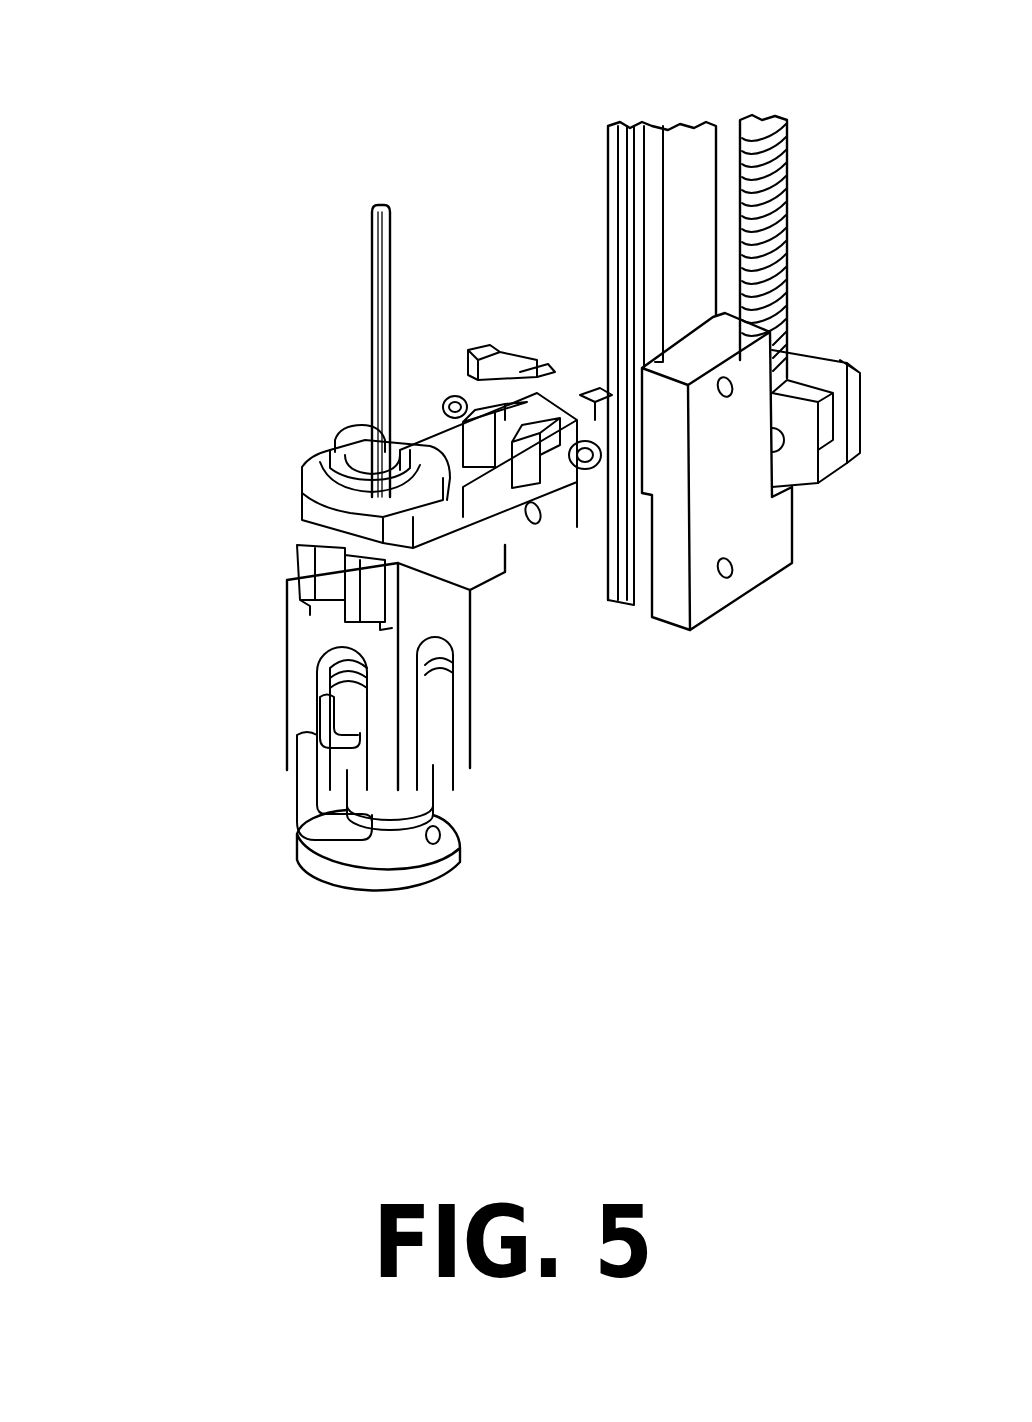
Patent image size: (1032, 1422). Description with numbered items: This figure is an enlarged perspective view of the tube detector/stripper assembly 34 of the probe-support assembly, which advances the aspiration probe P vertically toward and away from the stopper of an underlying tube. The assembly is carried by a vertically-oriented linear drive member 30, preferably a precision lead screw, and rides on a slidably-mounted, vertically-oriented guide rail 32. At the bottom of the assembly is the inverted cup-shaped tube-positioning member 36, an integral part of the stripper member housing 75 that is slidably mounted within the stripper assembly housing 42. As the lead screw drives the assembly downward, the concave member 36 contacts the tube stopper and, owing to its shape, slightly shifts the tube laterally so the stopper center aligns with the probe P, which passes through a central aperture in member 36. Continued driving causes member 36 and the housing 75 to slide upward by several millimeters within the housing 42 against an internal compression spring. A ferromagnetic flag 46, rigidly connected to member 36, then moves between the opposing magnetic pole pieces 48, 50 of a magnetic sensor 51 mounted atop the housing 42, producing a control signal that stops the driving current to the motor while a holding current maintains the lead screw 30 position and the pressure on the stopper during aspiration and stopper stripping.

The linear drive member 30 is at (768, 208).
The guide rail 32 is at (686, 165).
The tube detector/stripper assembly 34 is at (228, 765).
The tube-positioning member 36 is at (421, 847).
The stripper assembly housing 42 is at (460, 705).
The flag 46 is at (495, 483).
The magnetic pole piece 48 is at (487, 413).
The magnetic pole piece 50 is at (550, 420).
The magnetic sensor 51 is at (515, 402).
The stripper member housing 75 is at (438, 785).
The aspiration probe P is at (372, 360).